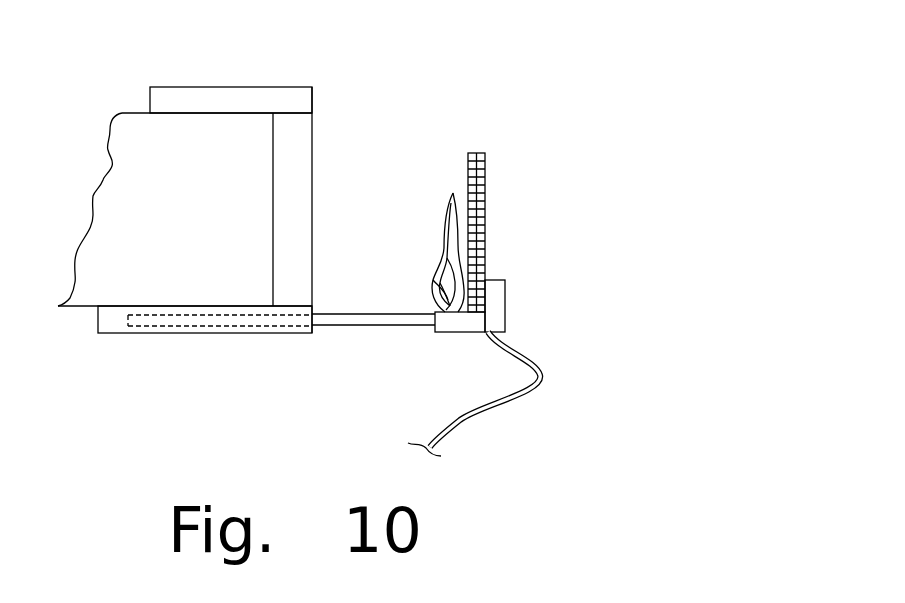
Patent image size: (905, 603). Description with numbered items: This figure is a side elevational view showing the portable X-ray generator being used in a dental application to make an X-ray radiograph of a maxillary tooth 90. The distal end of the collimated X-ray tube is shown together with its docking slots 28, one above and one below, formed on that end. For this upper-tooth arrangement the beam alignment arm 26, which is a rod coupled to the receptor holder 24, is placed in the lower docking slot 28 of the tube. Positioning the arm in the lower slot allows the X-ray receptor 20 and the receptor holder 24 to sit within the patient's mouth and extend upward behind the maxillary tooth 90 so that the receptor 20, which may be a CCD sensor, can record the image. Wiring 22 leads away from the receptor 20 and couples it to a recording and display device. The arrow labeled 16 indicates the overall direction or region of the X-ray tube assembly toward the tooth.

The heating assembly body 16 is at (362, 154).
The docking slot 28 is at (232, 86).
The beam alignment arm 26 is at (352, 326).
The receptor holder 24 is at (535, 286).
The X-ray receptor 20 is at (485, 187).
The maxillary tooth 90 is at (446, 210).
The wiring 22 is at (479, 418).